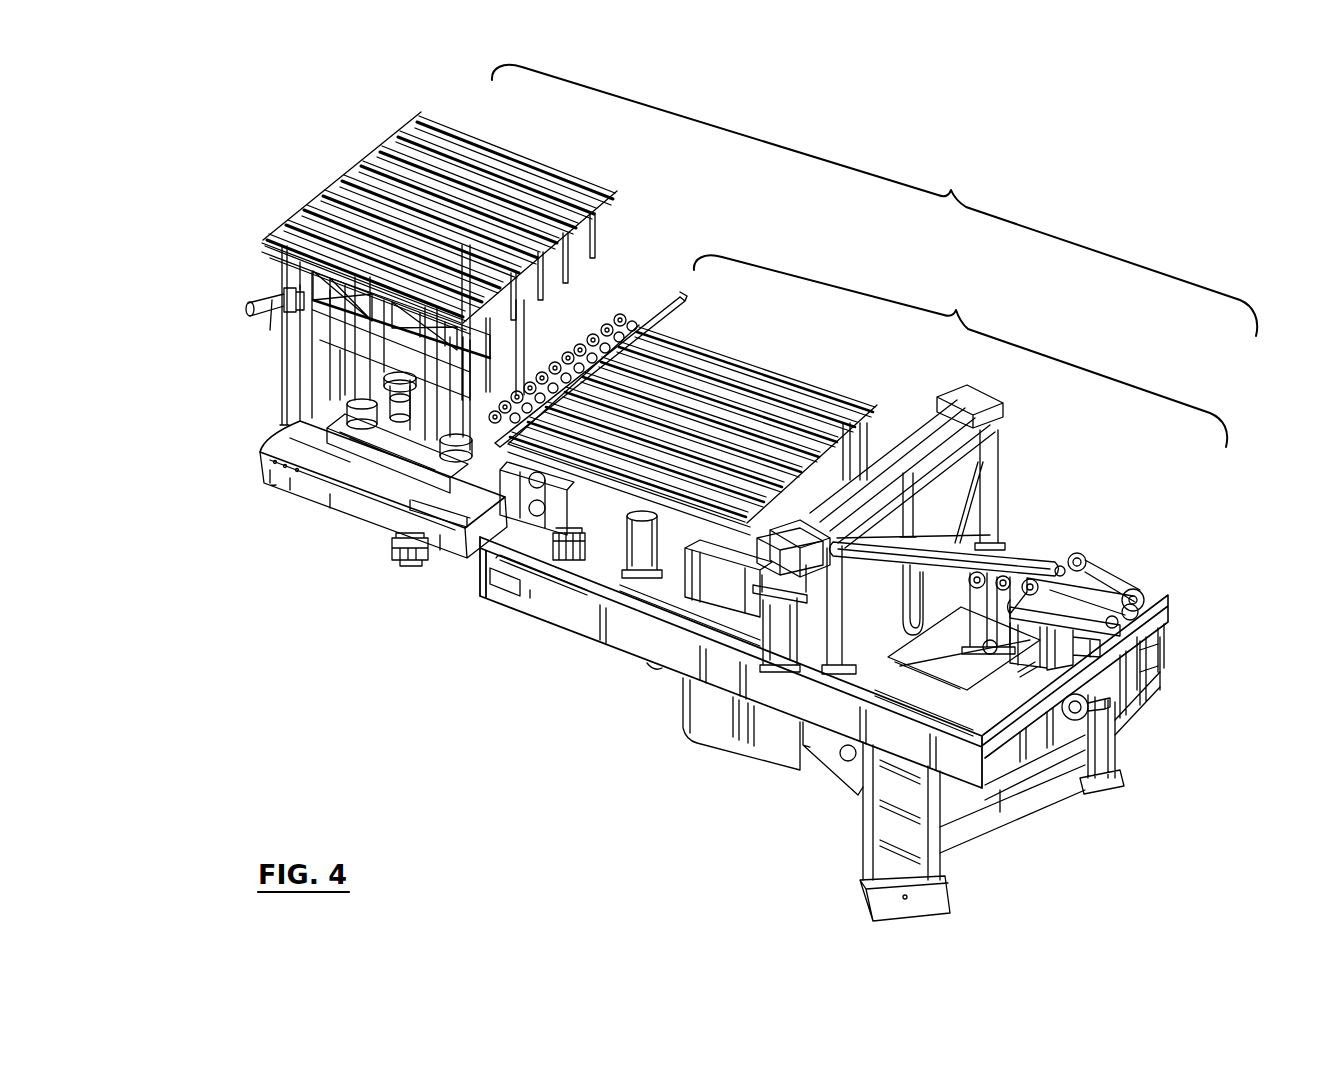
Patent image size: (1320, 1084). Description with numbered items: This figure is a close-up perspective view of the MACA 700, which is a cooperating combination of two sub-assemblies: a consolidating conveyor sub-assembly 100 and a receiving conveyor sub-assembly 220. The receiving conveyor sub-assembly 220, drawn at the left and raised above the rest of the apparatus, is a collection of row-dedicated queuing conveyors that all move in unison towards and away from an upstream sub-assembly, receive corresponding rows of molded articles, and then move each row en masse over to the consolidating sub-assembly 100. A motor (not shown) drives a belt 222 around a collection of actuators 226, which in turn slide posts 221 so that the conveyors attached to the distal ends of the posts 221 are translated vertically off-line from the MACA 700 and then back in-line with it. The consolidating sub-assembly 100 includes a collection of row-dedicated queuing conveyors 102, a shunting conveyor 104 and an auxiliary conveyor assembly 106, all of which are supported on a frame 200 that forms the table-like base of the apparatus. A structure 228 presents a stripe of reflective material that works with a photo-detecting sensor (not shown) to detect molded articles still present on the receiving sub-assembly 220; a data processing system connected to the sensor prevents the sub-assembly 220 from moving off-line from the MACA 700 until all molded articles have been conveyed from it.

The MACA 700 is at (874, 200).
The consolidating conveyor sub-assembly 100 is at (960, 351).
The row-dedicated queuing conveyors 102 is at (775, 349).
The shunting conveyor 104 is at (1030, 552).
The auxiliary conveyor assembly 106 is at (1120, 570).
The frame 200 is at (640, 640).
The receiving conveyor sub-assembly 220 is at (592, 168).
The posts 221 is at (352, 362).
The belt 222 is at (378, 432).
The actuators 226 is at (396, 548).
The structure 228 is at (686, 306).